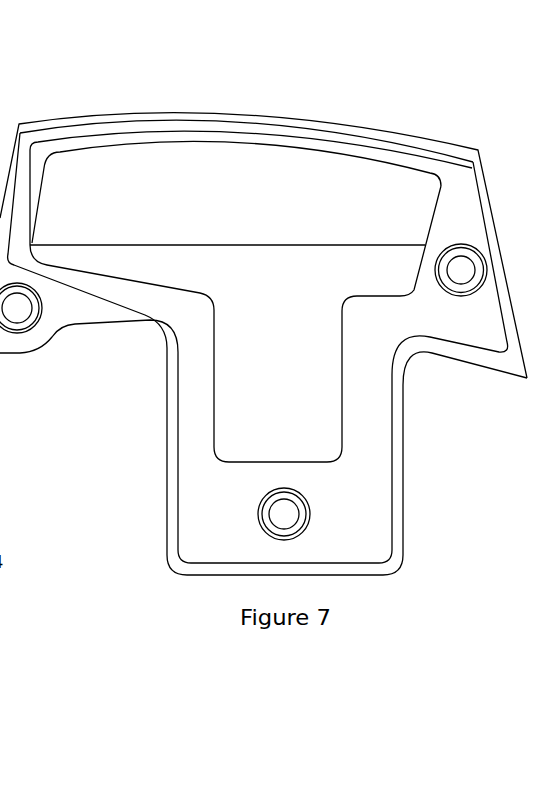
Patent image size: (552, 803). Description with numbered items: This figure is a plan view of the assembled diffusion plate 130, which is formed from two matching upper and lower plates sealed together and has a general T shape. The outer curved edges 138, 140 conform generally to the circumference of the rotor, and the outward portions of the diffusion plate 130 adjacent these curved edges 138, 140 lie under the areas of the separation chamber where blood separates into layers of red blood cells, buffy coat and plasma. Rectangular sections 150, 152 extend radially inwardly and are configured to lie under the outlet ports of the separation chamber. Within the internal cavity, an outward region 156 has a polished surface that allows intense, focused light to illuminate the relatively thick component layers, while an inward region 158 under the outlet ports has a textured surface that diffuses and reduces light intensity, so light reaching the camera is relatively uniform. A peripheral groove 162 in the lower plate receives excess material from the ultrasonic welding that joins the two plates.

The diffusion plate 130 is at (263, 323).
The curved edge 138 is at (388, 128).
The curved edge 140 is at (128, 135).
The rectangular section 150 is at (403, 533).
The rectangular section 152 is at (359, 504).
The outward region 156 is at (258, 163).
The inward region 158 is at (301, 402).
The peripheral groove 162 is at (172, 503).